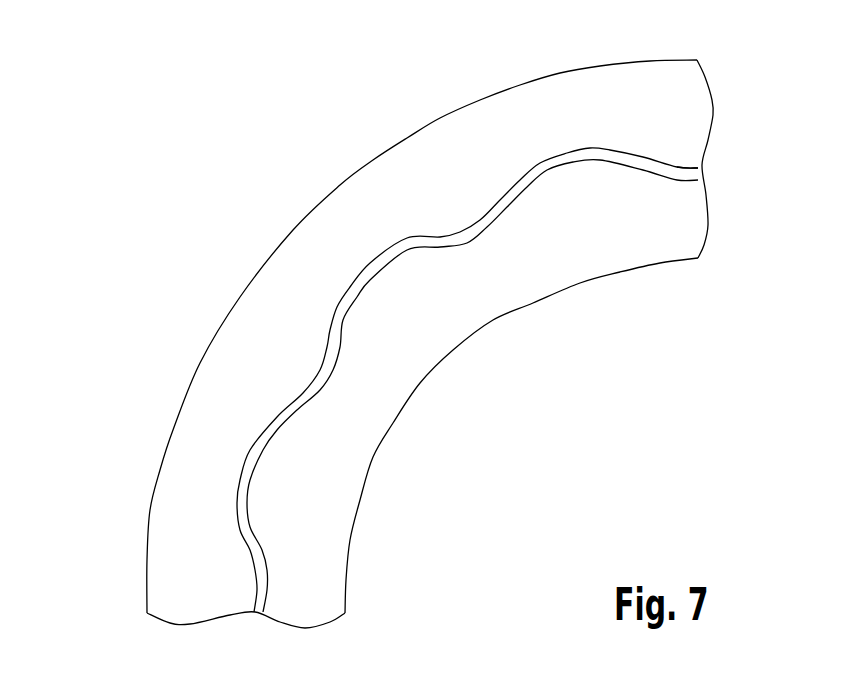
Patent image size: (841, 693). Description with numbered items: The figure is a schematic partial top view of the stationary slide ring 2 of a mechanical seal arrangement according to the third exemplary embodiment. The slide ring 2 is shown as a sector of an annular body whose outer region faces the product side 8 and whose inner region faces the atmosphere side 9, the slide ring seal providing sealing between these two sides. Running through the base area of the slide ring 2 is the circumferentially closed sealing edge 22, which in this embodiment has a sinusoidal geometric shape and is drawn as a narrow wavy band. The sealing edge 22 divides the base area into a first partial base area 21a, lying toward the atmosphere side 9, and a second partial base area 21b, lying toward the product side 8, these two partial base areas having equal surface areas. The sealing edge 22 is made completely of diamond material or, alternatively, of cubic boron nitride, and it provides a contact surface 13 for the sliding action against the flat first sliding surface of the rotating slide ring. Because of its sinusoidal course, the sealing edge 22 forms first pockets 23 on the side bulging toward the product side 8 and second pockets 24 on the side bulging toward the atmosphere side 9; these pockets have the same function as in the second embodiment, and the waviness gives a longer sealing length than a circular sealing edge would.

The stationary slide ring 2 is at (166, 228).
The product side 8 is at (246, 216).
The atmosphere side 9 is at (531, 470).
The contact surface 13 is at (674, 173).
The first partial base area 21a is at (655, 248).
The second partial base area 21b is at (625, 85).
The sealing edge 22 is at (424, 346).
The first pockets 23 is at (467, 217).
The second pockets 24 is at (566, 175).